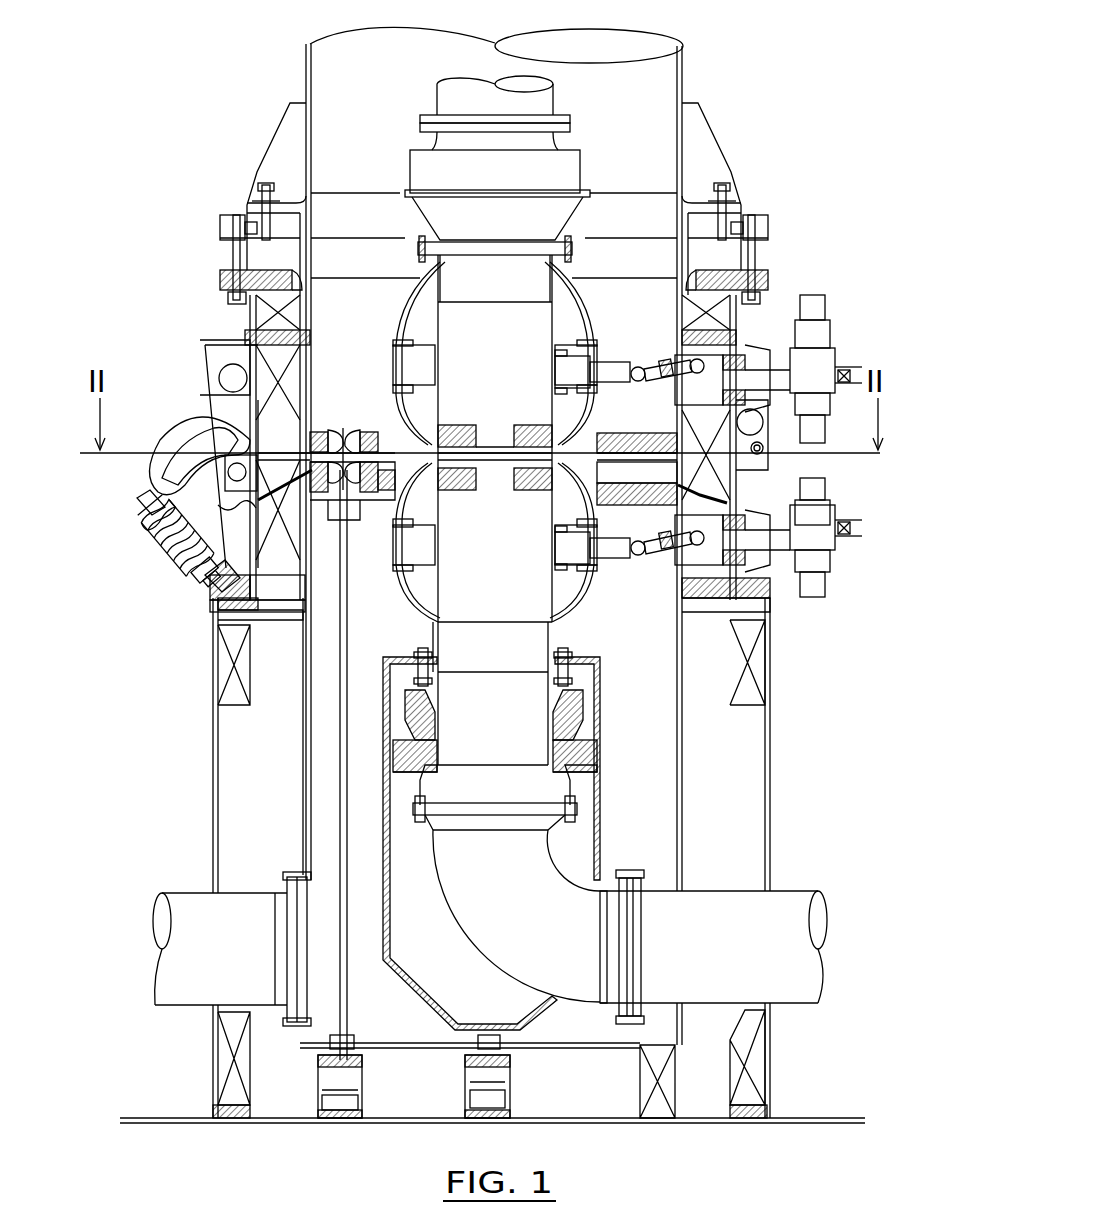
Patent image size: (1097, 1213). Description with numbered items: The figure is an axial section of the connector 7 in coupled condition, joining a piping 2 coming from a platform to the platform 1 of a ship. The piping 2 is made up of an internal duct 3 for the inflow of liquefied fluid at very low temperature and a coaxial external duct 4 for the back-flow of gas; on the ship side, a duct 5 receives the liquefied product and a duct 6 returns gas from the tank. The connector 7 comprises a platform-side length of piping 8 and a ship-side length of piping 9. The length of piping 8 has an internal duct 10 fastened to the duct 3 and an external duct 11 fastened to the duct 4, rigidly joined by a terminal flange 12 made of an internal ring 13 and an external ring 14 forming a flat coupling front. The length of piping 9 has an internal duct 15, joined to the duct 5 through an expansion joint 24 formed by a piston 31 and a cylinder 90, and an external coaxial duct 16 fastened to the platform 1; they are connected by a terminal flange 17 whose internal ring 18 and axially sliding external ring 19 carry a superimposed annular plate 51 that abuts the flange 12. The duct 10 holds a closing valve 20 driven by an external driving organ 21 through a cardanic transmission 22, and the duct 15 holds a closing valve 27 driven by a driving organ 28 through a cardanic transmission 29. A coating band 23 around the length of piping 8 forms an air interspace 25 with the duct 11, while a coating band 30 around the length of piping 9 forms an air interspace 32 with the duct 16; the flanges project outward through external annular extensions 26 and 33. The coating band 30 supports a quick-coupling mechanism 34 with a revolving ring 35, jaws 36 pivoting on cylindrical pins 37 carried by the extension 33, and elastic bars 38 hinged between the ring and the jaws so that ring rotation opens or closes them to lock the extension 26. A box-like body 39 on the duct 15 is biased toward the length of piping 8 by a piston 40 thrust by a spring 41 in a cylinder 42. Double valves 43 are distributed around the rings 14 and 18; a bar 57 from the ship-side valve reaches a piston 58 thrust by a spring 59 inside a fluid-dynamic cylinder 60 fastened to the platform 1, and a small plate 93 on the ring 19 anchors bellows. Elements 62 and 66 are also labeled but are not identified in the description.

The platform of a ship 1 is at (822, 1117).
The piping 2 is at (690, 68).
The internal duct 3 is at (446, 98).
The external duct 4 is at (306, 75).
The duct 5 is at (782, 890).
The duct 6 is at (190, 905).
The connector 7 is at (200, 326).
The length of piping 8 is at (248, 325).
The length of piping 9 is at (300, 754).
The internal duct 10 is at (552, 293).
The external duct 11 is at (677, 302).
The terminal flange 12 is at (640, 436).
The internal ring 13 is at (552, 420).
The external ring 14 is at (608, 450).
The internal duct 15 is at (552, 630).
The external coaxial duct 16 is at (677, 830).
The terminal flange 17 is at (645, 570).
The internal ring 18 is at (556, 505).
The external ring 19 is at (640, 506).
The closing valve 20 is at (410, 345).
The external driving organ 21 is at (803, 325).
The cardanic transmission 22 is at (668, 355).
The coating band 23 is at (230, 380).
The expansion joint 24 is at (570, 715).
The air interspace 25 is at (230, 410).
The external annular extension 26 is at (325, 432).
The closing valve 27 is at (556, 600).
The external driving organ 28 is at (828, 585).
The cardanic transmission 29 is at (650, 575).
The coating band 30 is at (770, 755).
The piston 31 is at (435, 765).
The air interspace 32 is at (730, 818).
The external annular extension 33 is at (320, 510).
The quick-coupling mechanism 34 is at (148, 555).
The revolving ring 35 is at (213, 598).
The jaws 36 is at (172, 475).
The cylindrical pins 37 is at (152, 520).
The elastic bars 38 is at (190, 555).
The box-like body 39 is at (600, 748).
The piston 40 is at (510, 1080).
The spring 41 is at (510, 1095).
The cylinder 42 is at (465, 1095).
The double valves 43 is at (358, 420).
The annular plate 51 is at (545, 468).
The bar 57 is at (347, 668).
The piston 58 is at (330, 1118).
The spring 59 is at (360, 1110).
The fluid-dynamic cylinder 60 is at (320, 1075).
The pivot pin 62 is at (760, 460).
The cam lever 66 is at (230, 445).
The cylinder 90 is at (555, 775).
The small plate 93 is at (372, 500).